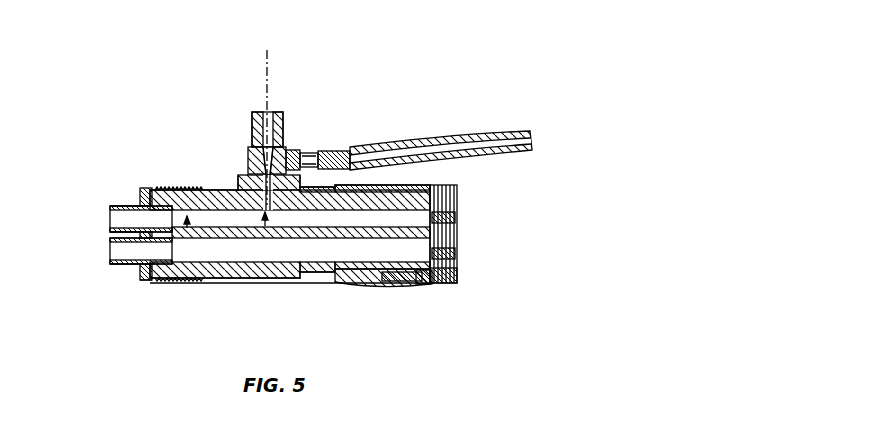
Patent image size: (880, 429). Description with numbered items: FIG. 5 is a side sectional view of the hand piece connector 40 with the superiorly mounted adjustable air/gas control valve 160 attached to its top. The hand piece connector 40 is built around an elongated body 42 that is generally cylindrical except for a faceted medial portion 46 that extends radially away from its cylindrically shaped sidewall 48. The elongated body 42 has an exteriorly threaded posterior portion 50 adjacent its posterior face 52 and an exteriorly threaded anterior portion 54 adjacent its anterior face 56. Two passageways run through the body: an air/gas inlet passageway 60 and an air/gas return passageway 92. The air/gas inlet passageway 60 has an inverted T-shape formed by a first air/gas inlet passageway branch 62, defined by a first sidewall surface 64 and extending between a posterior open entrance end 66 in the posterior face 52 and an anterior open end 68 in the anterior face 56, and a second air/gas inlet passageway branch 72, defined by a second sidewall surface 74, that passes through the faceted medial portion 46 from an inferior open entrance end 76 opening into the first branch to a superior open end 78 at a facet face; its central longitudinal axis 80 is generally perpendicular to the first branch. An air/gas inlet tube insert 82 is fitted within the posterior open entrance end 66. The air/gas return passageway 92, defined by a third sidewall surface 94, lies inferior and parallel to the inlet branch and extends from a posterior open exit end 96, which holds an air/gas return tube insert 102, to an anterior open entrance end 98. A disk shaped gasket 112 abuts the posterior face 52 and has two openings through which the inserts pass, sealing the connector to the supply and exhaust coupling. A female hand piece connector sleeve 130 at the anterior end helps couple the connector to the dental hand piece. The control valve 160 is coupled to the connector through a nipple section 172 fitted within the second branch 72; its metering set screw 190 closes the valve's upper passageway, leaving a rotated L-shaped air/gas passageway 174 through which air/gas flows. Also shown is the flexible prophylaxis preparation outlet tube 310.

The hand piece connector 40 is at (118, 140).
The elongated body 42 is at (308, 280).
The faceted medial portion 46 is at (273, 279).
The cylindrically shaped sidewall 48 is at (212, 280).
The exteriorly threaded posterior portion 50 is at (180, 189).
The posterior face 52 is at (146, 190).
The exteriorly threaded anterior portion 54 is at (420, 286).
The anterior face 56 is at (457, 272).
The air/gas inlet passageway 60 is at (146, 281).
The first air/gas inlet passageway branch 62 is at (191, 212).
The first sidewall surface 64 is at (180, 282).
The posterior open entrance end 66 is at (168, 219).
The anterior open end 68 is at (446, 218).
The second air/gas inlet passageway branch 72 is at (318, 193).
The second sidewall surface 74 is at (296, 198).
The inferior open entrance end 76 is at (237, 266).
The superior open end 78 is at (299, 156).
The central longitudinal axis 80 is at (265, 62).
The air/gas inlet tube insert 82 is at (110, 206).
The air/gas return passageway 92 is at (352, 286).
The third sidewall surface 94 is at (396, 274).
The posterior open exit end 96 is at (168, 251).
The anterior open entrance end 98 is at (446, 252).
The air/gas return tube insert 102 is at (112, 266).
The disk shaped gasket 112 is at (142, 282).
The female hand piece connector sleeve 130 is at (462, 187).
The superiorly mounted adjustable air/gas control valve 160 is at (267, 120).
The nipple section 172 is at (240, 180).
The L-shaped air/gas passageway 174 is at (255, 160).
The metering set screw 190 is at (258, 112).
The prophylaxis preparation outlet tube 310 is at (500, 134).